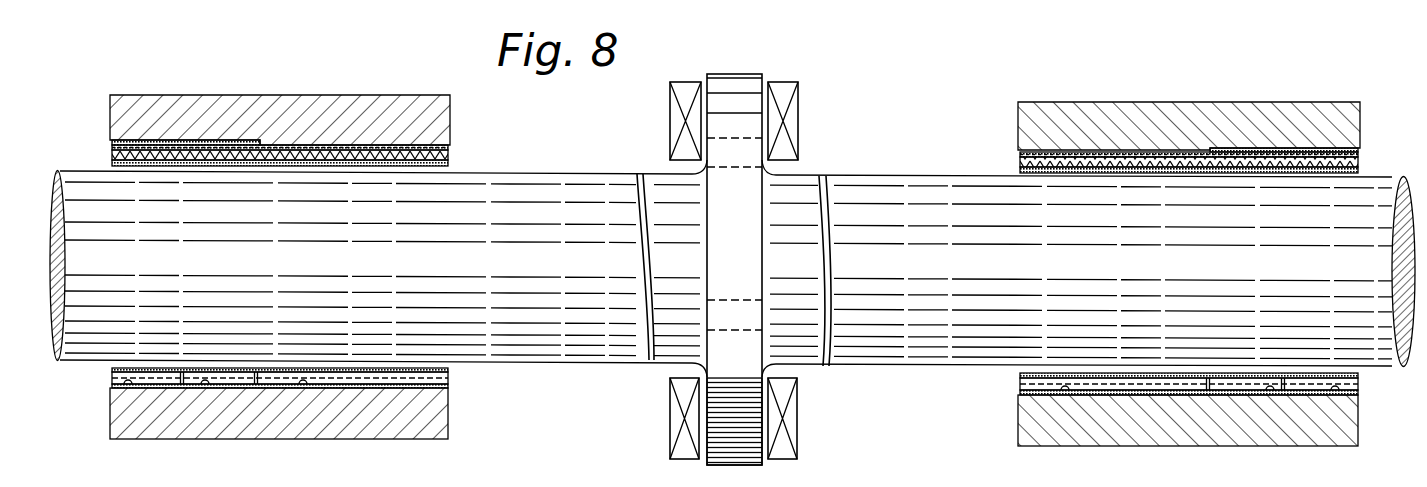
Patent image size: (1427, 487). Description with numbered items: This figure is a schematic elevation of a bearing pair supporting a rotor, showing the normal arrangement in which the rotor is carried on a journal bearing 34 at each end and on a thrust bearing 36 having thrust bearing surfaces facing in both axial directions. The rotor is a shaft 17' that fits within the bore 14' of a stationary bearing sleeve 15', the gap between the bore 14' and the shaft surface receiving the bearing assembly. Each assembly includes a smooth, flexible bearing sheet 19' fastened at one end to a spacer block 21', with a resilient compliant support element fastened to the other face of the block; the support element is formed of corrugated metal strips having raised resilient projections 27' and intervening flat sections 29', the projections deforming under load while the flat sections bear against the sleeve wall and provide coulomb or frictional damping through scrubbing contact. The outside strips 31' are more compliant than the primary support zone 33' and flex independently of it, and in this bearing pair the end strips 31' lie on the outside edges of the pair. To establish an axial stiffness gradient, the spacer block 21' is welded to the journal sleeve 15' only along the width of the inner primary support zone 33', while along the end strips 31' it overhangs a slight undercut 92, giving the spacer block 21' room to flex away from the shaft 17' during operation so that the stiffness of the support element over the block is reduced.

The bore 14' is at (735, 101).
The bearing sleeve 15' is at (735, 92).
The shaft 17' is at (732, 268).
The bearing sheet 19' is at (735, 262).
The spacer block 21' is at (722, 96).
The raised resilient projections 27' is at (735, 428).
The flat sections 29' is at (727, 431).
The outside strips 31' is at (732, 429).
The primary support zone 33' is at (735, 253).
The journal bearing 34 is at (275, 69).
The thrust bearing 36 is at (812, 131).
The undercut 92 is at (112, 156).